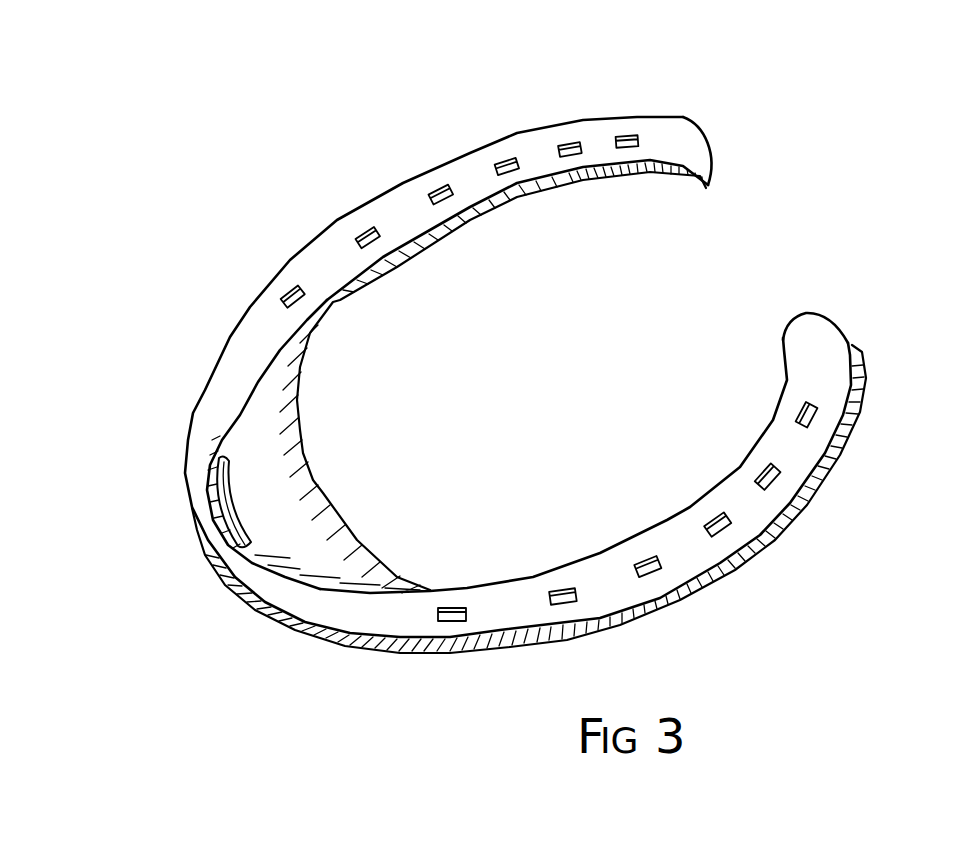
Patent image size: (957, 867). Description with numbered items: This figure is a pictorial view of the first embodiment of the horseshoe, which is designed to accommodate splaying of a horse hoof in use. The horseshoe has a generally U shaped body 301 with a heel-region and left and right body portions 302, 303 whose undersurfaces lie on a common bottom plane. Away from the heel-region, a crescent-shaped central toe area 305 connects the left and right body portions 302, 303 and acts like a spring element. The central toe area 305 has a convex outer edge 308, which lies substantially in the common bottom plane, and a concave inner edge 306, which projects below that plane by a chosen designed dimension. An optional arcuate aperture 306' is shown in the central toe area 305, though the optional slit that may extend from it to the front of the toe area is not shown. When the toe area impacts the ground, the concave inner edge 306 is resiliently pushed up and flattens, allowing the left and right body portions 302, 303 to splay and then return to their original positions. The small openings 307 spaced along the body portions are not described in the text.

The U shaped body 301 is at (243, 318).
The left body portion 302 is at (828, 348).
The right body portion 303 is at (680, 143).
The central toe area 305 is at (260, 457).
The concave inner edge 306 is at (501, 376).
The arcuate aperture 306' is at (170, 517).
The nail holes 307 is at (573, 146).
The convex outer edge 308 is at (240, 420).